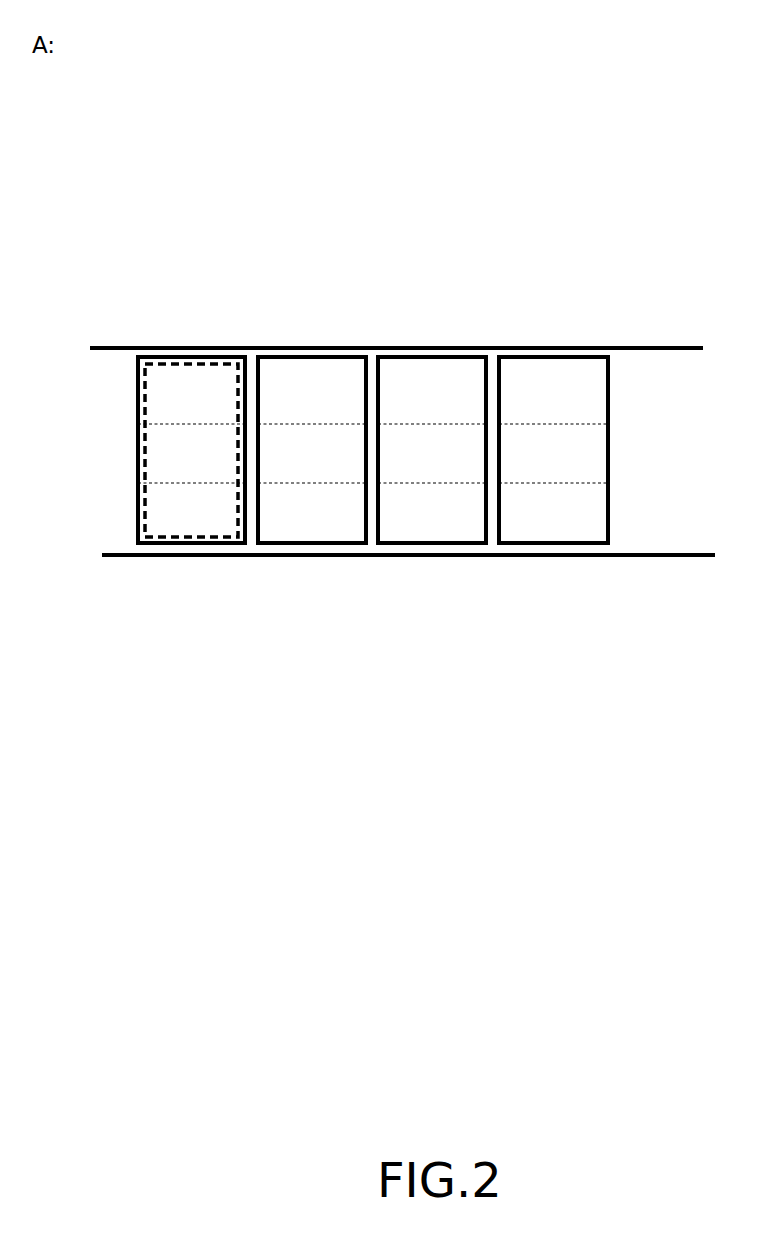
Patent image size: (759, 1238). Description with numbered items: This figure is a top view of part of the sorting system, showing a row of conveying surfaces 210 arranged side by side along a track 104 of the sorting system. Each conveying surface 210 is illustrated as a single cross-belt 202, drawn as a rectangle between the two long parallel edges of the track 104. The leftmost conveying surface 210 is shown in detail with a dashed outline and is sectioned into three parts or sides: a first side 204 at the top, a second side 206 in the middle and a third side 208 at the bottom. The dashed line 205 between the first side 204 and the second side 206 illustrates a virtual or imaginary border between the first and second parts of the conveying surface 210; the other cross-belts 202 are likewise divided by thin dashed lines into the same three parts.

The substrate / strip 104 is at (686, 347).
The cross-belt 202 is at (192, 355).
The first side of conveying surface 204 is at (185, 395).
The dashed line 205 is at (213, 423).
The second side of conveying surface 206 is at (187, 457).
The third side of conveying surface 208 is at (190, 520).
The conveying surface 210 is at (240, 533).